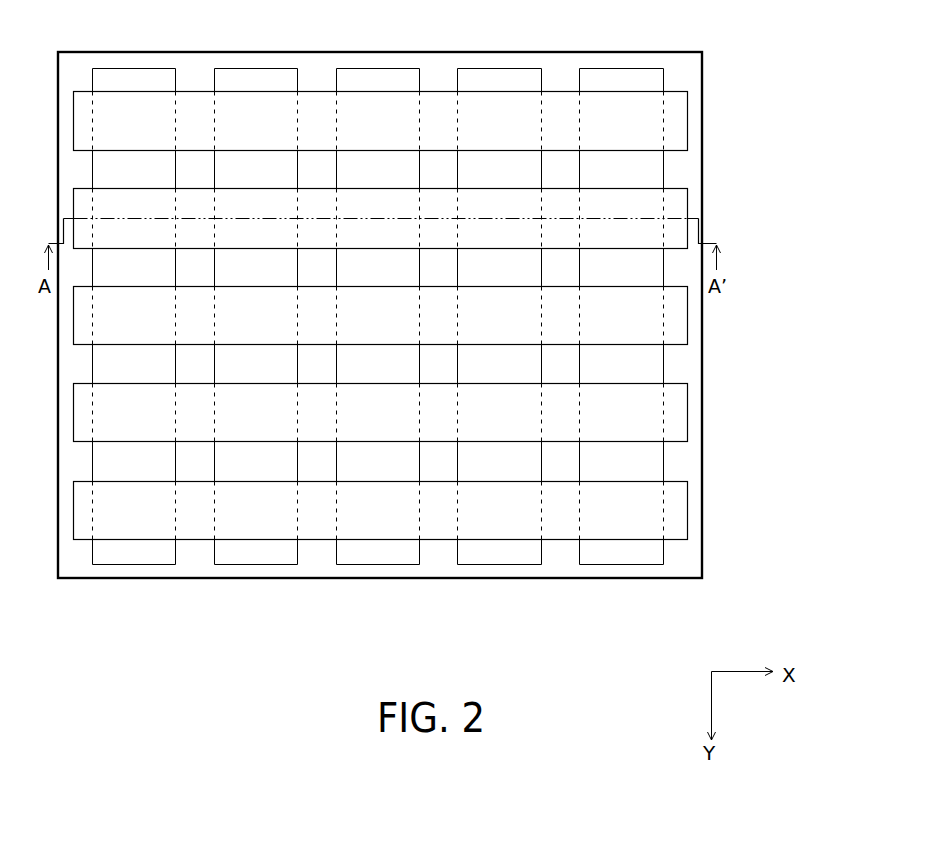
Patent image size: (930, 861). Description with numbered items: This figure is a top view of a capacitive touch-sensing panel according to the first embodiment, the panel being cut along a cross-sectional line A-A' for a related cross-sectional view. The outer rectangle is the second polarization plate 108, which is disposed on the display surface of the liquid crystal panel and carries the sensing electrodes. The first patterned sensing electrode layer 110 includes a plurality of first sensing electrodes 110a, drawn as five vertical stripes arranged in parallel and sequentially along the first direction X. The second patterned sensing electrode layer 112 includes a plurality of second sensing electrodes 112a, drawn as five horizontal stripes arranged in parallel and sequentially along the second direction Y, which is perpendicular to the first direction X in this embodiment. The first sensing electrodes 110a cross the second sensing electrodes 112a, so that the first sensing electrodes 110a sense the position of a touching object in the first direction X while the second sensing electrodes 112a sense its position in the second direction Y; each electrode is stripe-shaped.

The second polarization plate 108 is at (703, 67).
The first patterned sensing electrode layer 110 is at (388, 290).
The first sensing electrodes 110a is at (621, 72).
The second patterned sensing electrode layer 112 is at (440, 316).
The second sensing electrodes 112a is at (682, 524).